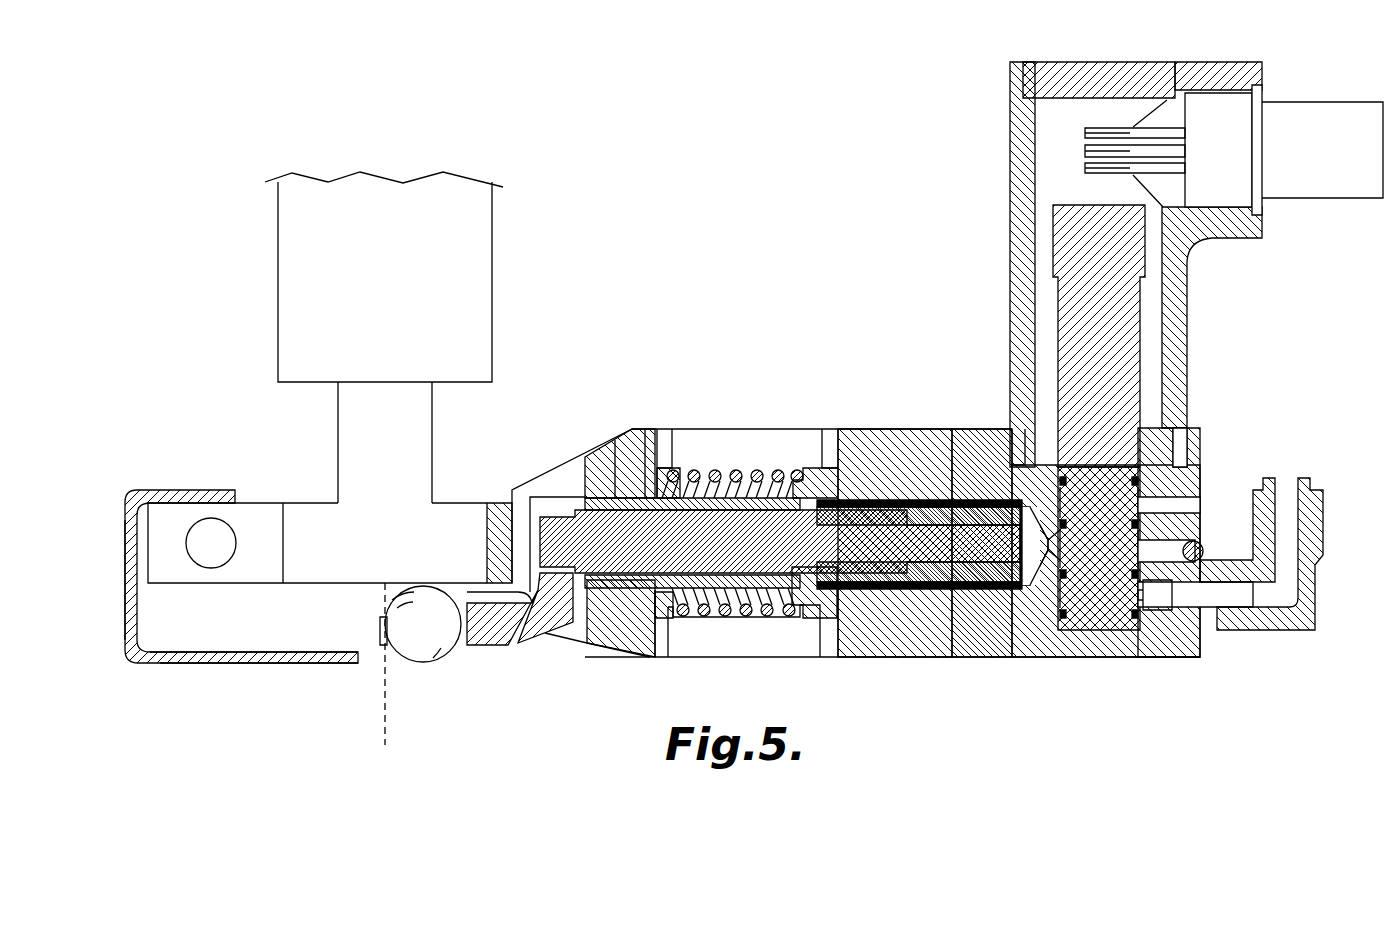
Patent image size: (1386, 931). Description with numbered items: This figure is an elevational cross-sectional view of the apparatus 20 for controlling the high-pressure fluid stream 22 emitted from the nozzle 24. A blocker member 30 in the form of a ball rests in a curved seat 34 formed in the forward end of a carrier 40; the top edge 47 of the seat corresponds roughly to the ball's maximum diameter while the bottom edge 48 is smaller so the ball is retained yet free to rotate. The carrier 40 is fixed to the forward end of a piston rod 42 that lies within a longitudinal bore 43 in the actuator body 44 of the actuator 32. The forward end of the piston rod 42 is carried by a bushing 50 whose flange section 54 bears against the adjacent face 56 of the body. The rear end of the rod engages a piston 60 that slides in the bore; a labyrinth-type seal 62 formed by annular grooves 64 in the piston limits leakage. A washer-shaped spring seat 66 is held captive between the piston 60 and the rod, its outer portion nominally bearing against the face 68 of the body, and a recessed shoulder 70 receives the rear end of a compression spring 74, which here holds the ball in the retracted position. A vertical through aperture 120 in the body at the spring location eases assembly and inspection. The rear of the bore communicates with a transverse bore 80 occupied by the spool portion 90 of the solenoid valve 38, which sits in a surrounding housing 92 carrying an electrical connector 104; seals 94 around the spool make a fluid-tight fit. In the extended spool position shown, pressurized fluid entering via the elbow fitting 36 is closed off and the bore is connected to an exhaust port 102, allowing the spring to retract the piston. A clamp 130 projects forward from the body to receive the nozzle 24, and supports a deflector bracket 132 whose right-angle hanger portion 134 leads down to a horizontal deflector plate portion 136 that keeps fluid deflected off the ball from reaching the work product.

The apparatus 20 is at (723, 163).
The high-pressure fluid stream 22 is at (383, 673).
The nozzle 24 is at (278, 252).
The blocker member 30 is at (435, 653).
The actuator 32 is at (898, 663).
The seat 34 is at (460, 640).
The fitting 36 is at (1323, 513).
The solenoid valve 38 is at (1053, 233).
The carrier 40 is at (553, 638).
The piston rod 42 is at (615, 470).
The longitudinal bore 43 is at (585, 498).
The actuator body 44 is at (890, 429).
The top edge of the seat 47 is at (382, 616).
The bottom edge of the seat 48 is at (383, 637).
The bushing 50 is at (625, 493).
The flange section 54 is at (680, 489).
The face of the body 56 is at (658, 630).
The piston 60 is at (1010, 587).
The labyrinth-type seal 62 is at (947, 630).
The annular grooves 64 is at (948, 429).
The spring seat 66 is at (815, 618).
The face of housing body 68 is at (828, 443).
The recessed shoulder 70 is at (812, 470).
The compression spring 74 is at (748, 617).
The transverse bore 80 is at (1067, 590).
The spool portion 90 is at (1108, 460).
The housing 92 is at (1010, 160).
The seals 94 is at (1137, 522).
The exhaust port 102 is at (1182, 505).
The electrical connector 104 is at (1337, 105).
The vertical through aperture 120 is at (752, 454).
The clamp 130 is at (268, 495).
The deflector bracket 132 is at (122, 557).
The hanger portion 134 is at (123, 625).
The deflector plate portion 136 is at (174, 665).